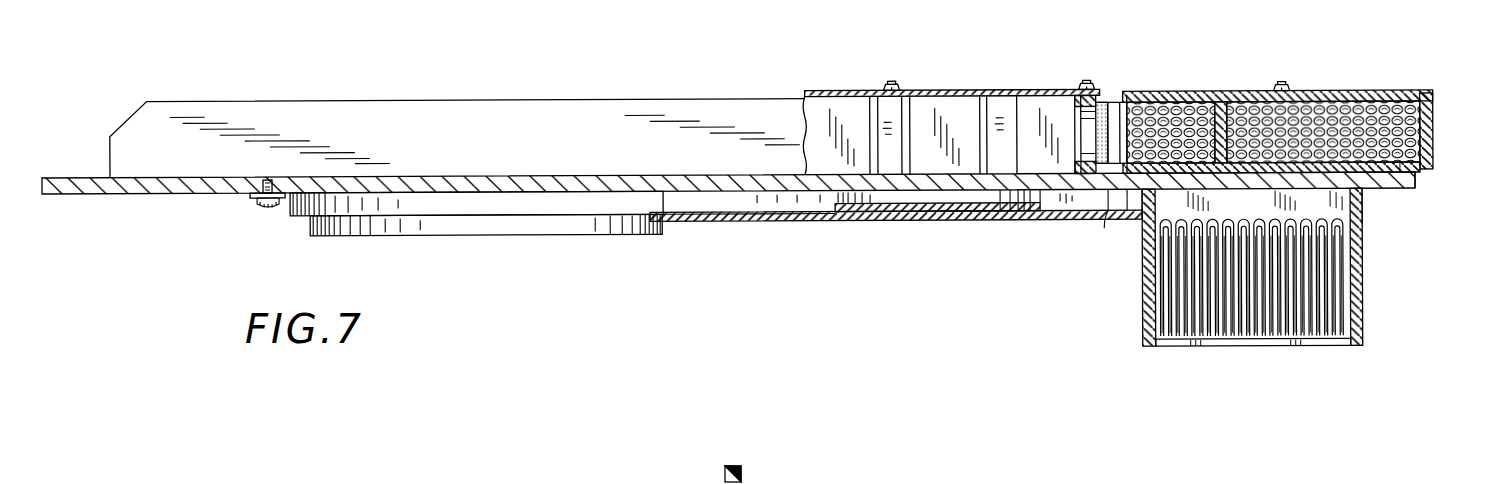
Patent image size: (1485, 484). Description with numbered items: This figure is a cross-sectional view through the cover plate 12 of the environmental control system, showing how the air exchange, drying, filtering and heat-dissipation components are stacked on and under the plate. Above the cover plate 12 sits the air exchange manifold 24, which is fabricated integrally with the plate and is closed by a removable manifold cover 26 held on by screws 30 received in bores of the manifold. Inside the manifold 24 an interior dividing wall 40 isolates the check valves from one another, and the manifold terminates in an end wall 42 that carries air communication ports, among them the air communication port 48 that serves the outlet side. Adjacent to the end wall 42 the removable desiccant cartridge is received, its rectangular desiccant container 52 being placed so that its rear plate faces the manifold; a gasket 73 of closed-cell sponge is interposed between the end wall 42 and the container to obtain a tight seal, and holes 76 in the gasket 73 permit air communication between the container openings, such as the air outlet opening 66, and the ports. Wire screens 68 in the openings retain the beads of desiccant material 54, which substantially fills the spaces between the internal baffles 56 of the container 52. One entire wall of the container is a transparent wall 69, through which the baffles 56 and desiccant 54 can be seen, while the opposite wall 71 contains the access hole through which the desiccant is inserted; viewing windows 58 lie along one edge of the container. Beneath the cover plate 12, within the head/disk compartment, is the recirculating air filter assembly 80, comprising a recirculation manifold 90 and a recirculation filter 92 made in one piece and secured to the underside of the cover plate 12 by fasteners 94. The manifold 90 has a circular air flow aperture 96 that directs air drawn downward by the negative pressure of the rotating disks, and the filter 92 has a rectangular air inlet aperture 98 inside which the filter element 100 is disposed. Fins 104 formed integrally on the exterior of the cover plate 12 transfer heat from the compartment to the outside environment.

The cover plate 12 is at (1273, 293).
The air exchange manifold 24 is at (951, 102).
The manifold cover 26 is at (1005, 102).
The screws 30 is at (887, 92).
The interior dividing wall 40 is at (1049, 100).
The end wall 42 is at (1110, 106).
The air communication port 48 is at (1100, 199).
The desiccant container 52 is at (1400, 185).
The desiccant material 54 is at (1368, 188).
The internal baffles 56 is at (1200, 113).
The viewing windows 58 is at (1438, 106).
The air outlet opening 66 is at (1152, 110).
The wire screens 68 is at (1142, 198).
The transparent wall 69 is at (1394, 104).
The wall 71 is at (1336, 198).
The gasket 73 is at (1097, 230).
The holes 76 is at (1097, 198).
The recirculating air filter assembly 80 is at (1117, 263).
The recirculation manifold 90 is at (797, 225).
The recirculation filter 92 is at (1362, 350).
The fasteners 94 is at (268, 213).
The air flow aperture 96 is at (640, 225).
The air inlet aperture 98 is at (1343, 345).
The filter element 100 is at (1212, 350).
The fins 104 is at (294, 112).